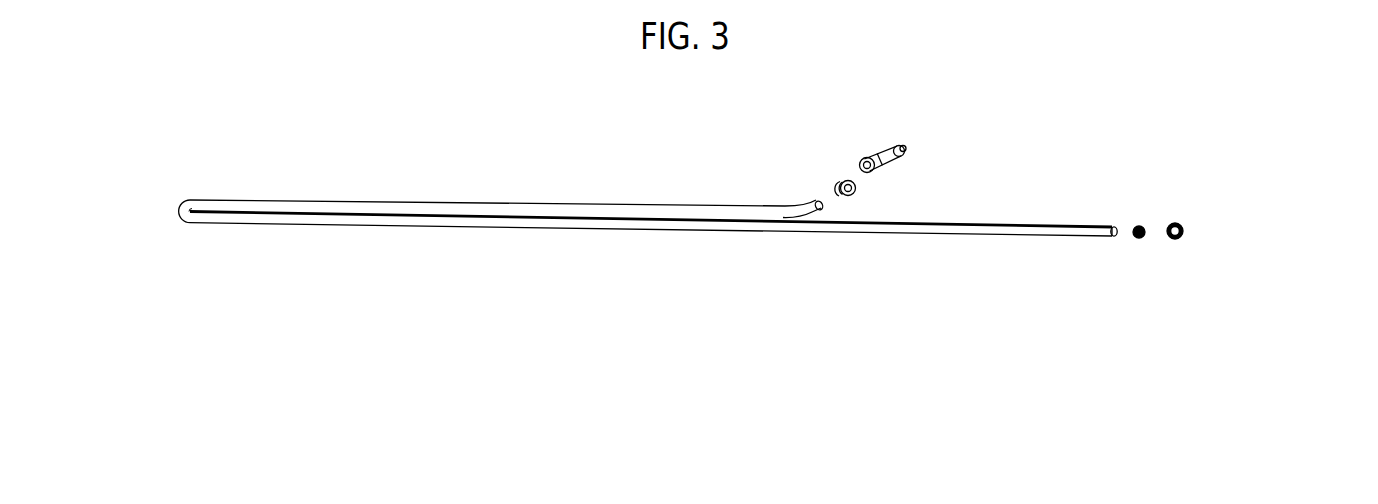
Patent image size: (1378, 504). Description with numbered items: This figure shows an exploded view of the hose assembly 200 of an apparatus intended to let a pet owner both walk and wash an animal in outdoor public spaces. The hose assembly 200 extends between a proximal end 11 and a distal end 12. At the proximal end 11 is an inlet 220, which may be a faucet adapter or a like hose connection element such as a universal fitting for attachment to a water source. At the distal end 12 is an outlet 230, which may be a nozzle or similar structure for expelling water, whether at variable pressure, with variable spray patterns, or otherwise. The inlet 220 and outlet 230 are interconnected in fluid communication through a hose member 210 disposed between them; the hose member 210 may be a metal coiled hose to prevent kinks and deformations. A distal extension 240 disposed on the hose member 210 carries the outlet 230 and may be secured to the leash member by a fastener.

The hose assembly 200 is at (293, 91).
The distal extension 240 is at (474, 191).
The hose member 210 is at (468, 240).
The distal end 12 is at (822, 122).
The outlet 230 is at (914, 135).
The proximal end 11 is at (1194, 166).
The inlet 220 is at (1200, 227).